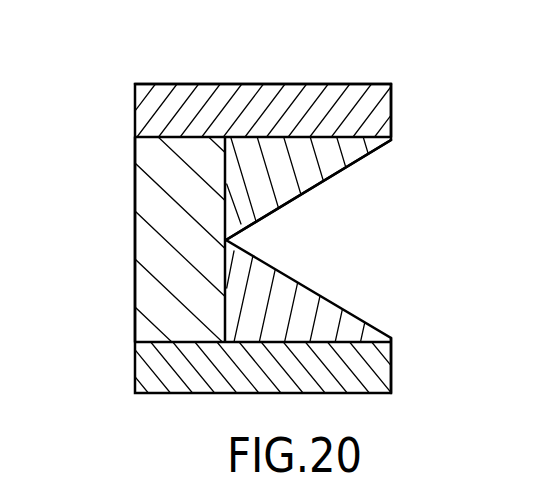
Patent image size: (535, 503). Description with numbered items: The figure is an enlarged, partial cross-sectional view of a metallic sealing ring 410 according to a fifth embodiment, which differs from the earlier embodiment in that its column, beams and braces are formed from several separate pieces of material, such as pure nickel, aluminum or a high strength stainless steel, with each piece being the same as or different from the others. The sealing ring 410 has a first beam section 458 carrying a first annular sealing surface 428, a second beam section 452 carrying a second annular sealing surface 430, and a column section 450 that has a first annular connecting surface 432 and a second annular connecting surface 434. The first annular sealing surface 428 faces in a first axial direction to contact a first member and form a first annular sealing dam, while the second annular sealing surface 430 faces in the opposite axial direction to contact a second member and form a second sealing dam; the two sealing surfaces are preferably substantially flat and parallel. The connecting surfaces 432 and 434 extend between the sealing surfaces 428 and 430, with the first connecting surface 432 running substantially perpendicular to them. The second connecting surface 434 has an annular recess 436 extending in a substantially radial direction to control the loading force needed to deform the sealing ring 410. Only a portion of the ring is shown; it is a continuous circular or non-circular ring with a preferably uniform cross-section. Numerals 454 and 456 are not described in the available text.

The metallic sealing ring 410 is at (102, 74).
The first annular sealing surface 428 is at (345, 394).
The second annular sealing surface 430 is at (293, 83).
The first annular connecting surface 432 is at (135, 215).
The second annular connecting surface 434 is at (392, 101).
The annular recess 436 is at (320, 182).
The column section 450 is at (147, 287).
The second beam section 452 is at (392, 83).
The lower leg end surface 454 is at (383, 373).
The upper tapered portion 456 is at (295, 183).
The first beam section 458 is at (332, 315).